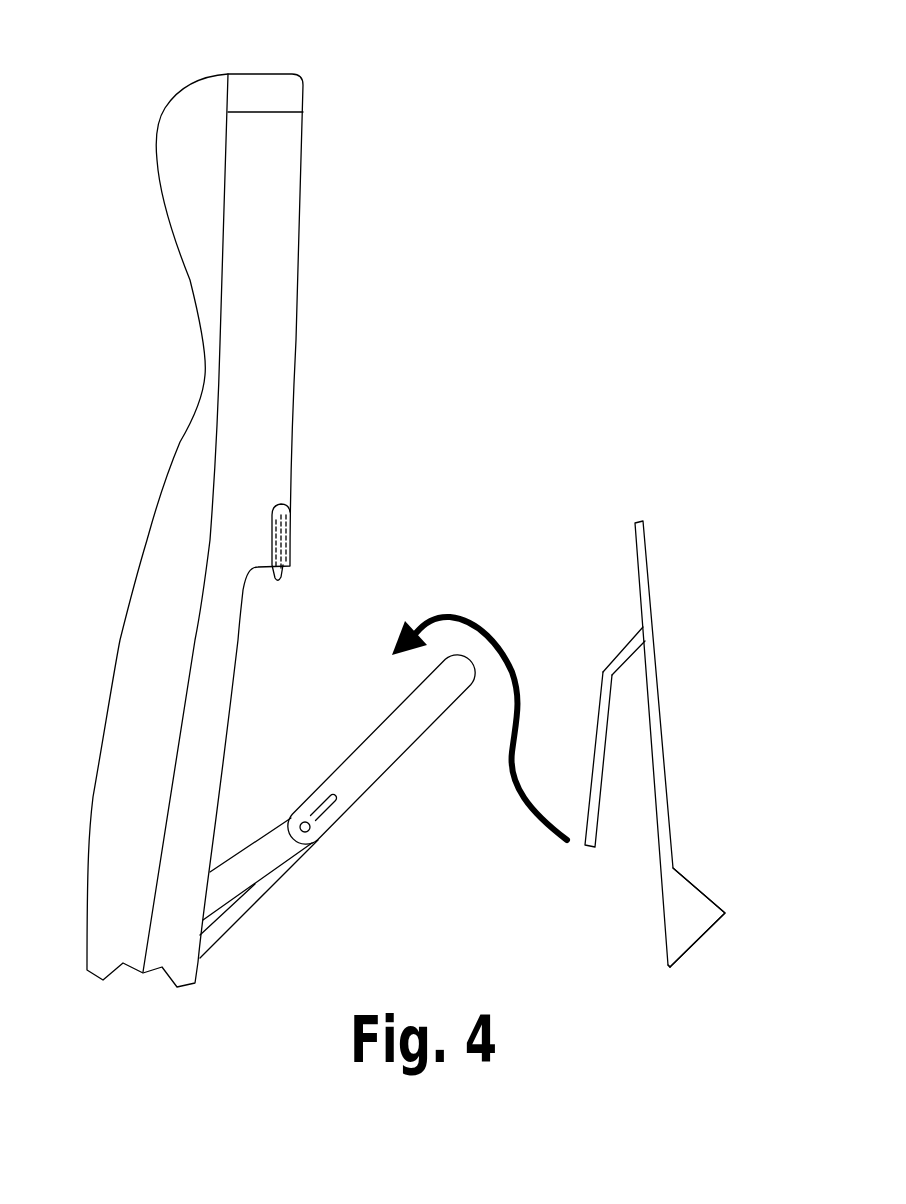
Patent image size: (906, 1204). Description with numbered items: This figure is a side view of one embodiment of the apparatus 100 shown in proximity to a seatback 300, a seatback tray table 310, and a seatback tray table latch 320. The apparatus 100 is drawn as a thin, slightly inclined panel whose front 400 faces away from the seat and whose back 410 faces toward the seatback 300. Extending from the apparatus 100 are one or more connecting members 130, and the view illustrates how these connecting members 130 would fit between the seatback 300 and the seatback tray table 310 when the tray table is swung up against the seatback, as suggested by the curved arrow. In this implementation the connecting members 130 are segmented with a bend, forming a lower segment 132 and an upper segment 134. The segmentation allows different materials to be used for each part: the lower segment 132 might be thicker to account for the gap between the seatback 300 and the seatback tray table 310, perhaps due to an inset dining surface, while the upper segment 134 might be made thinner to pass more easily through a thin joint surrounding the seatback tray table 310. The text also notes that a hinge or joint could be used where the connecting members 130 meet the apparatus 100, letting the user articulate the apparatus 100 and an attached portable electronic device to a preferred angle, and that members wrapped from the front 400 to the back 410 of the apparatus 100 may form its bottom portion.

The apparatus 100 is at (670, 578).
The connecting members 130 is at (591, 698).
The lower segment 132 is at (621, 648).
The upper segment 134 is at (600, 724).
The seatback 300 is at (372, 136).
The seatback tray table 310 is at (386, 766).
The seatback tray table latch 320 is at (288, 574).
The front of the apparatus 400 is at (700, 855).
The back of the apparatus 410 is at (644, 856).